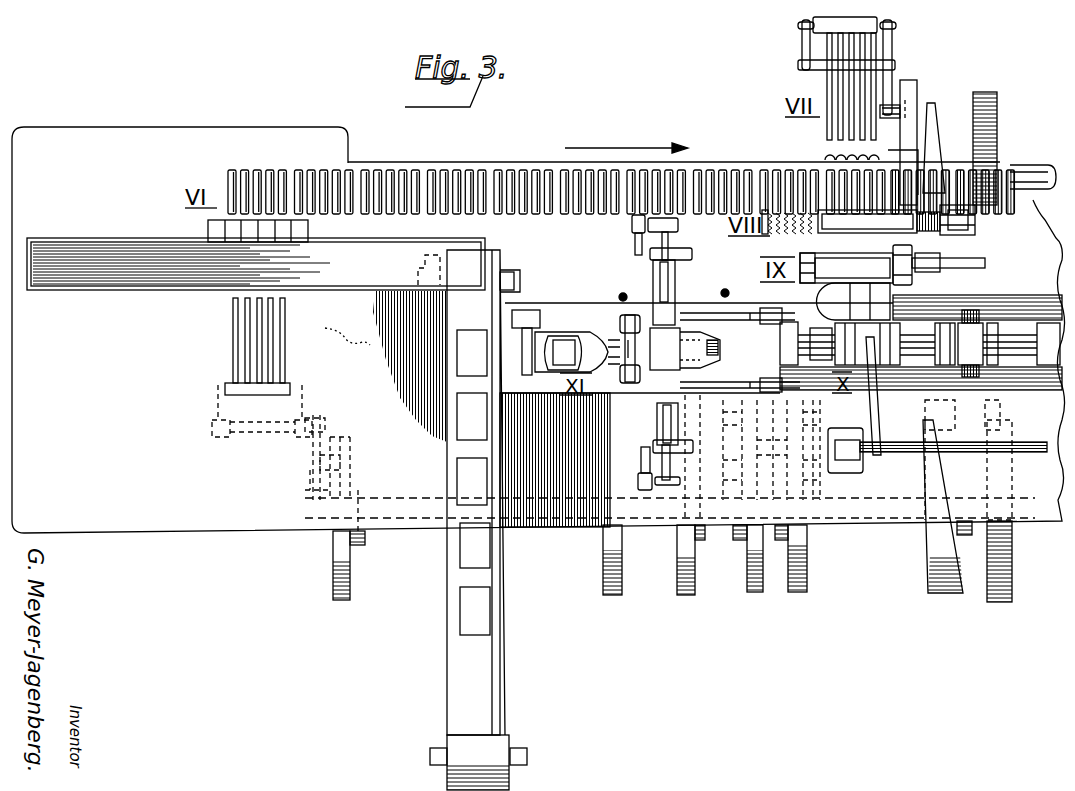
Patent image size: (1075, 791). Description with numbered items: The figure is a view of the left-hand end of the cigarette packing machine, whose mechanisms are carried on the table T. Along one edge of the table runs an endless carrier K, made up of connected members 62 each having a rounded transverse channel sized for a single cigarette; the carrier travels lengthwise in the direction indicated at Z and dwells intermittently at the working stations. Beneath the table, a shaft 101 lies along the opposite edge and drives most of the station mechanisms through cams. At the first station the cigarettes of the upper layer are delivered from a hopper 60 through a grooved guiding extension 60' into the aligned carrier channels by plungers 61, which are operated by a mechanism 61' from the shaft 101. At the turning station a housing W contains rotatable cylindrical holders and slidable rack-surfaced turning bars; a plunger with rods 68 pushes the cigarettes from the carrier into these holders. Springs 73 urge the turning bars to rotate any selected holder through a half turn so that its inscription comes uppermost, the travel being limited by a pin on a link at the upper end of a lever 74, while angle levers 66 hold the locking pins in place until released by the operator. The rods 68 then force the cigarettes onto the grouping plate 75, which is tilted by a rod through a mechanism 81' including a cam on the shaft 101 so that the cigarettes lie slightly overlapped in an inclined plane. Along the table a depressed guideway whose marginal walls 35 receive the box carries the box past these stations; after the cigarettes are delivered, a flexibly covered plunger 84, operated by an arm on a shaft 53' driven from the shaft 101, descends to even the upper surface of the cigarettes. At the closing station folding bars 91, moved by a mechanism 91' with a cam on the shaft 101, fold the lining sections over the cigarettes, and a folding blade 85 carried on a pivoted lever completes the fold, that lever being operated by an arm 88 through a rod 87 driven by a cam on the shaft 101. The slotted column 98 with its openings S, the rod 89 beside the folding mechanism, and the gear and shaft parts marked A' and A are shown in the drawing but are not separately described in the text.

The table T is at (137, 523).
The endless carrier K is at (320, 172).
The connected members 62 is at (520, 178).
The direction of travel arrow Z is at (610, 170).
The hopper 60 is at (256, 281).
The grooved guiding extension 60' is at (283, 231).
The plungers 61 is at (265, 367).
The mechanism 61' is at (337, 413).
The slotted column 98 is at (497, 655).
The slots S is at (466, 475).
The shaft 101 is at (530, 530).
The rod 89 is at (622, 320).
The arm 88 is at (620, 293).
The rod 87 is at (723, 289).
The folding bars 91 is at (660, 367).
The folding blade 85 is at (666, 383).
The mechanism 81' is at (783, 482).
The mechanism 91' is at (664, 553).
The plate 75 is at (828, 298).
The springs 73 is at (782, 233).
The housing W is at (896, 220).
The lever 74 is at (975, 222).
The plunger rods 68 is at (848, 82).
The angle levers 66 is at (825, 157).
The gears / posts A' is at (985, 347).
The shaft A is at (1033, 165).
The marginal walls 35 is at (1000, 307).
The plunger 84 is at (866, 385).
The shaft 53' is at (953, 463).